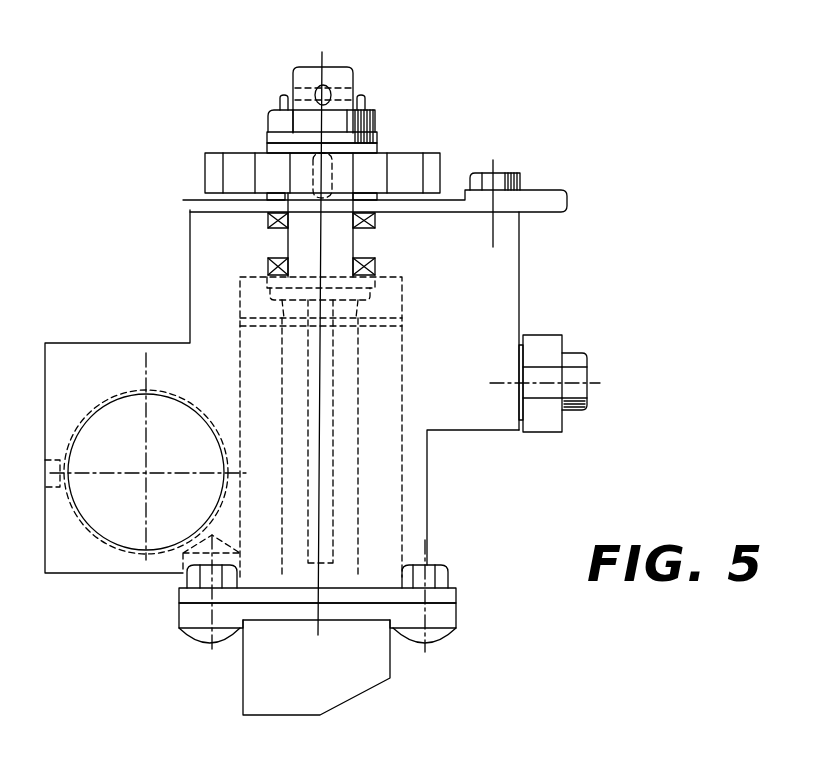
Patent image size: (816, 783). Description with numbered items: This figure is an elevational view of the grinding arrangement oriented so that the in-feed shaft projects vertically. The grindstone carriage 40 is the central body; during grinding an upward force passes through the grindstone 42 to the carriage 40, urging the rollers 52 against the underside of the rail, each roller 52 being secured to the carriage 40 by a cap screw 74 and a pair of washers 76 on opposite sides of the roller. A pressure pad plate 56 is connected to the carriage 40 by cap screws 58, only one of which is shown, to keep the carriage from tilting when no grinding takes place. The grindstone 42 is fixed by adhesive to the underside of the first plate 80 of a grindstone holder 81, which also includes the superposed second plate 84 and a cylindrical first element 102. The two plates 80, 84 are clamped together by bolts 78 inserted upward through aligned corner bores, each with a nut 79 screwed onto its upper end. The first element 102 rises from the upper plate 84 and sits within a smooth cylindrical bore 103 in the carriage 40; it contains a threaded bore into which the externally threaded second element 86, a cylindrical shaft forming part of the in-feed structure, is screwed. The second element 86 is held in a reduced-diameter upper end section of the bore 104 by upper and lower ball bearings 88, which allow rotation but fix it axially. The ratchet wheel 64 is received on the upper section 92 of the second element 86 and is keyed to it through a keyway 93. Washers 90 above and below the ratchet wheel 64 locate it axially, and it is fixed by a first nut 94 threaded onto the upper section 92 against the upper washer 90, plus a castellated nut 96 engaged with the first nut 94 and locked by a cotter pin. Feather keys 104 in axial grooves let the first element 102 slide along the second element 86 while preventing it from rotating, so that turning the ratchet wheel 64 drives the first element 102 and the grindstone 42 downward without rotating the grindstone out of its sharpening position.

The grindstone carriage 40 is at (87, 575).
The grindstone 42 is at (243, 705).
The roller 52 is at (548, 335).
The pressure pad plate 56 is at (569, 197).
The cap screw 58 is at (520, 175).
The ratchet wheel 64 is at (205, 153).
The cap screw 74 is at (588, 365).
The washer 76 is at (566, 407).
The bolt 78 is at (196, 638).
The nut 79 is at (440, 567).
The first plate 80 is at (457, 612).
The grindstone holder 81 is at (171, 616).
The second plate 84 is at (455, 590).
The second element 86 is at (345, 455).
The ball bearing 88 is at (267, 218).
The washer 90 is at (267, 147).
The upper section 92 is at (313, 66).
The keyway 93 is at (337, 180).
The first nut 94 is at (265, 140).
The castellated nut 96 is at (273, 115).
The first element 102 is at (378, 478).
The cylindrical bore 103 is at (238, 307).
The feather key 104 is at (325, 513).